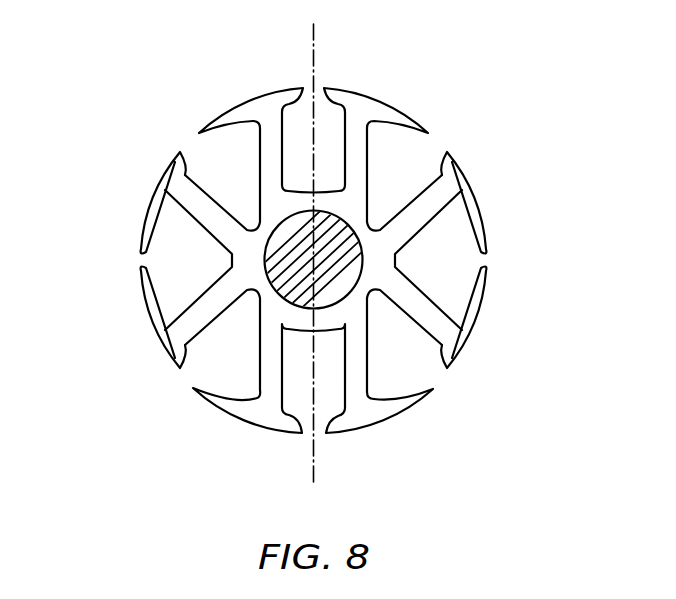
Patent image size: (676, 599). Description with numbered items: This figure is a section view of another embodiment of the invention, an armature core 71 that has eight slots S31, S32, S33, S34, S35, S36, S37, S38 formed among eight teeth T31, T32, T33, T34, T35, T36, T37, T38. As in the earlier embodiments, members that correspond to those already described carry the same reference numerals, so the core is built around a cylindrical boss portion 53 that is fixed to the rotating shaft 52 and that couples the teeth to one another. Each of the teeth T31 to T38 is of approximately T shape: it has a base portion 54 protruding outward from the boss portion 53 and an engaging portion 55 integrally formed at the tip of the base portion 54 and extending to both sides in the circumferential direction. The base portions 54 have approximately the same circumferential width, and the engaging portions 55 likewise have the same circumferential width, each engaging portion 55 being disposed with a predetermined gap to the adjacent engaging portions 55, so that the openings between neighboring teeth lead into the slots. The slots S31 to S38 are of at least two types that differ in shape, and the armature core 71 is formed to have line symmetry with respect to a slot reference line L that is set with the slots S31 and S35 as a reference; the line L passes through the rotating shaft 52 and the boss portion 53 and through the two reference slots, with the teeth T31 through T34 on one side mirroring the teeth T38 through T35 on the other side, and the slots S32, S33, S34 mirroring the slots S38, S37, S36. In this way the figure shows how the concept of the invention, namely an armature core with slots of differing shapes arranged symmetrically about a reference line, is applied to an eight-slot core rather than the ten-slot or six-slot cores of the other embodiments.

The tooth T31 is at (394, 89).
The tooth T32 is at (497, 186).
The tooth T33 is at (491, 328).
The tooth T34 is at (360, 445).
The tooth T35 is at (253, 440).
The tooth T36 is at (150, 356).
The tooth T37 is at (152, 152).
The tooth T38 is at (248, 89).
The slot S31 is at (304, 86).
The slot S32 is at (422, 155).
The slot S33 is at (460, 260).
The slot S34 is at (435, 366).
The slot S35 is at (302, 422).
The slot S36 is at (208, 376).
The slot S37 is at (142, 254).
The slot S38 is at (203, 170).
The rotating shaft 52 is at (343, 272).
The boss portion 53 is at (232, 254).
The base portion 54 is at (242, 134).
The engaging portion 55 is at (232, 108).
The armature core 71 is at (426, 90).
The slot reference line L is at (331, 24).